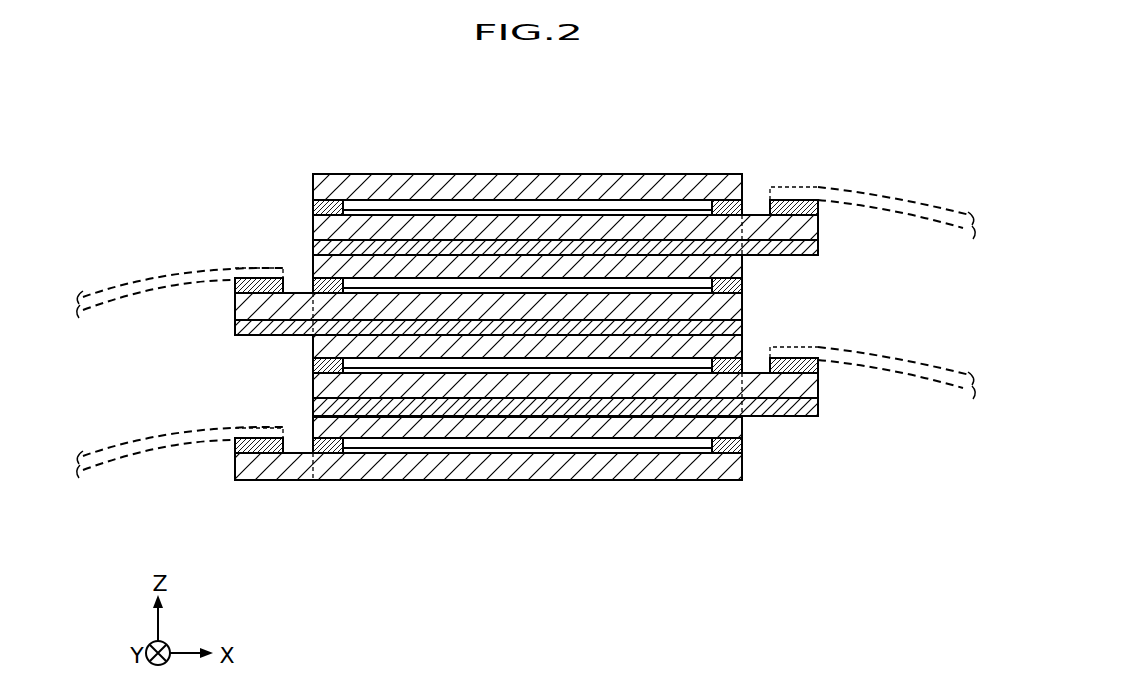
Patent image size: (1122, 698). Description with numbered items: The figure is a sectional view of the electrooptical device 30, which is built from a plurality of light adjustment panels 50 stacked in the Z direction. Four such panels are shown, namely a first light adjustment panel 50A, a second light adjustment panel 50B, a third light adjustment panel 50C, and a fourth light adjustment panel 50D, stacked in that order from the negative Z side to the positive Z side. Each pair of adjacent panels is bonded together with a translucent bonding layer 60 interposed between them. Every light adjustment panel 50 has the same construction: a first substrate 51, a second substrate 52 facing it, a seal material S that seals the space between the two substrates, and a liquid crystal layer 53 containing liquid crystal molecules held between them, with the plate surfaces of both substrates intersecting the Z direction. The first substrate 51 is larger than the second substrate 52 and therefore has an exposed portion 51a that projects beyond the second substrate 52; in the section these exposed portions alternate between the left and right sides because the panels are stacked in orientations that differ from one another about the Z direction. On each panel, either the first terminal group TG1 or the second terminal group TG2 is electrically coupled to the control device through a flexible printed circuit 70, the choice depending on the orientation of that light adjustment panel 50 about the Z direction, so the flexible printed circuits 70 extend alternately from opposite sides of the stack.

The electrooptical device 30 is at (756, 136).
The light adjustment panel 50 is at (521, 338).
The first light adjustment panel 50A is at (230, 487).
The second light adjustment panel 50B is at (815, 422).
The third light adjustment panel 50C is at (230, 335).
The fourth light adjustment panel 50D is at (616, 224).
The first substrate 51 is at (707, 227).
The exposed portion 51a is at (802, 225).
The second substrate 52 is at (727, 188).
The liquid crystal layer 53 is at (376, 208).
The translucent bonding layer 60 is at (727, 328).
The flexible printed circuit 70 is at (150, 273).
The first terminal group TG1 is at (790, 202).
The second terminal group TG2 is at (820, 367).
The seal material S is at (320, 192).